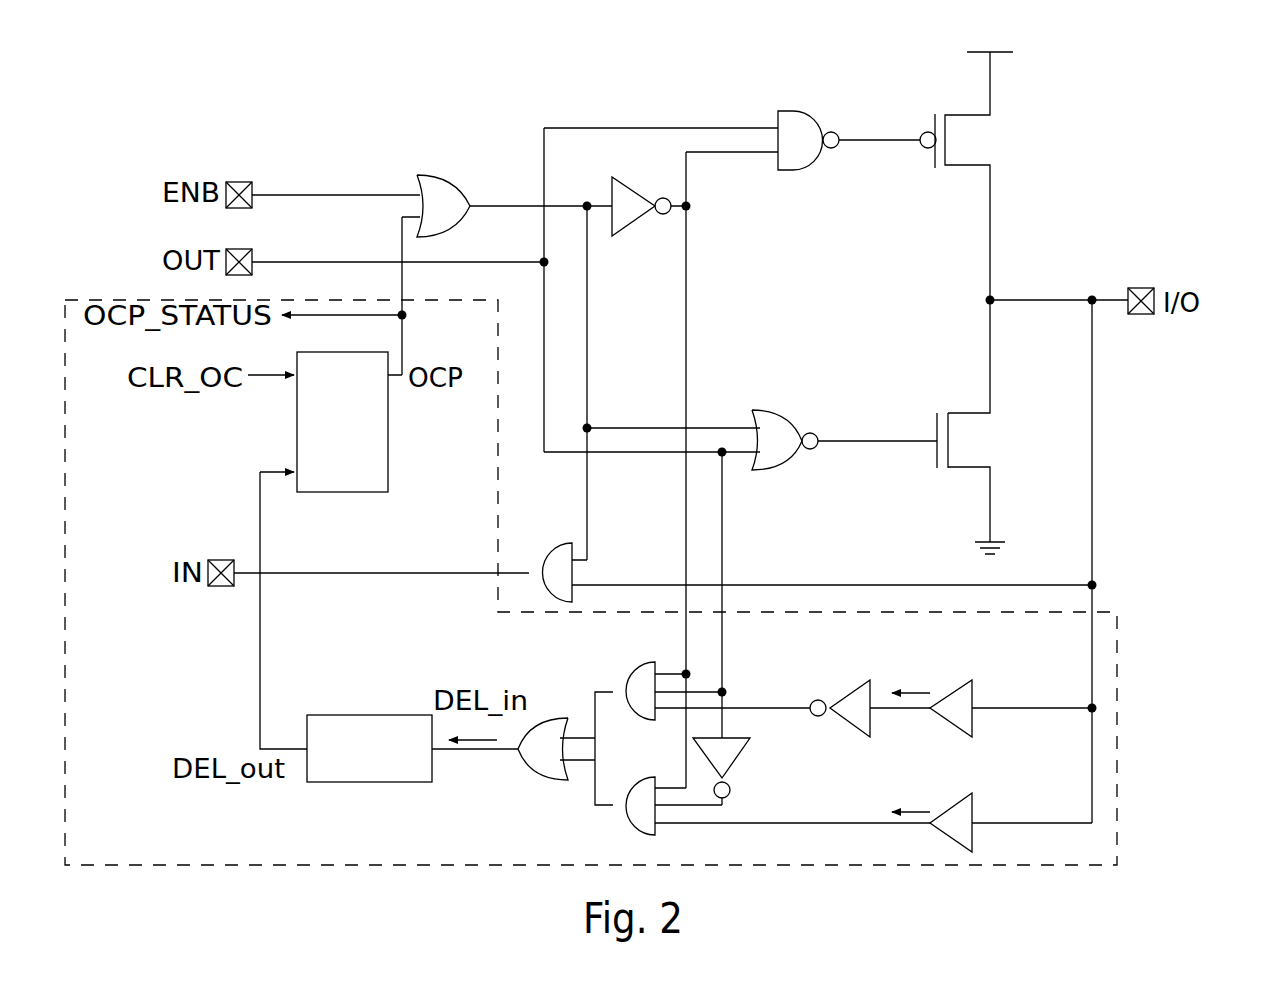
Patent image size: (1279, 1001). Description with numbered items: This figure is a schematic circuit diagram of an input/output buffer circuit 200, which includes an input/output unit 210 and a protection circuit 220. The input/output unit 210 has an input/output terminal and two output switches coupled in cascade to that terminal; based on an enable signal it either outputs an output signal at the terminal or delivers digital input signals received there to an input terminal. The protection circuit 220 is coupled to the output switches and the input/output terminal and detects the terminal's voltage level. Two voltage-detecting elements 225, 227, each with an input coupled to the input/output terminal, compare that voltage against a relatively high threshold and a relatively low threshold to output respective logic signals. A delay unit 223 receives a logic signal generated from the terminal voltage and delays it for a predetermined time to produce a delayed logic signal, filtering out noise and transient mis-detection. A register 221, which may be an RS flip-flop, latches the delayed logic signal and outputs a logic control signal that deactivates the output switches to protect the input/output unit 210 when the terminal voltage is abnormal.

The I/O buffer circuit 200 is at (385, 902).
The I/O unit 210 is at (1100, 127).
The protection circuit 220 is at (1117, 648).
The register 221 is at (365, 439).
The delay unit 223 is at (393, 762).
The voltage-detecting element 225 is at (952, 681).
The voltage-detecting element 227 is at (952, 793).